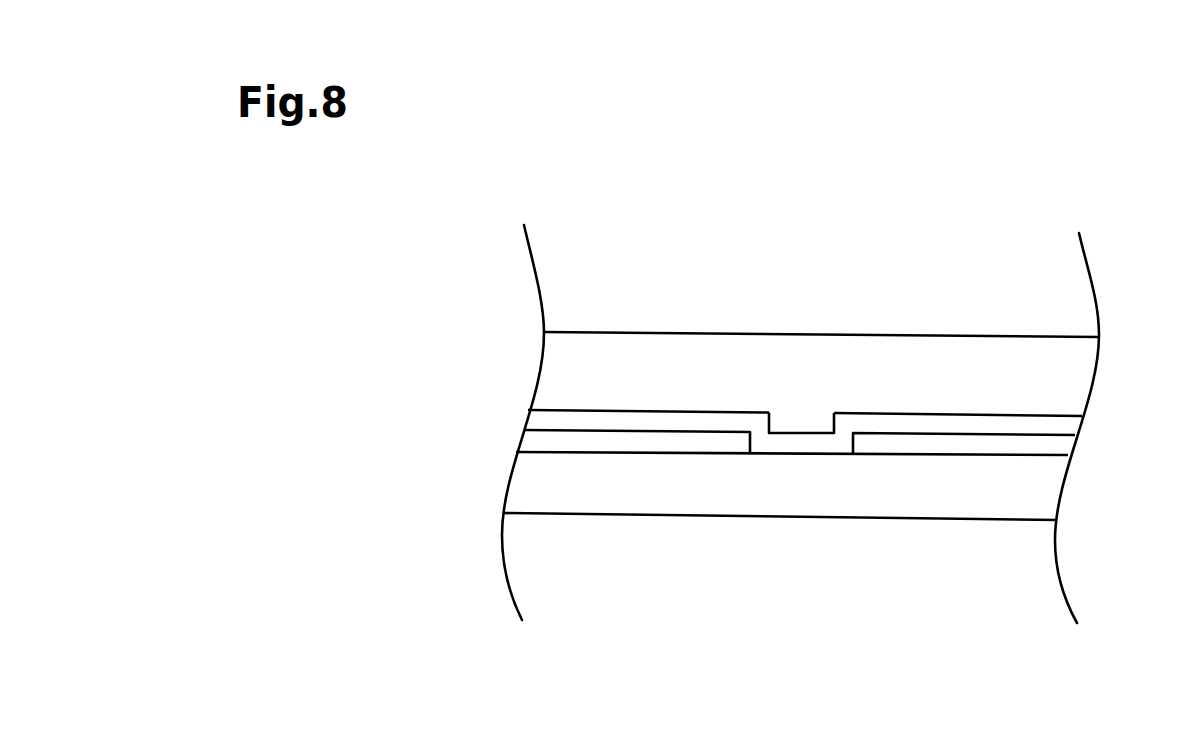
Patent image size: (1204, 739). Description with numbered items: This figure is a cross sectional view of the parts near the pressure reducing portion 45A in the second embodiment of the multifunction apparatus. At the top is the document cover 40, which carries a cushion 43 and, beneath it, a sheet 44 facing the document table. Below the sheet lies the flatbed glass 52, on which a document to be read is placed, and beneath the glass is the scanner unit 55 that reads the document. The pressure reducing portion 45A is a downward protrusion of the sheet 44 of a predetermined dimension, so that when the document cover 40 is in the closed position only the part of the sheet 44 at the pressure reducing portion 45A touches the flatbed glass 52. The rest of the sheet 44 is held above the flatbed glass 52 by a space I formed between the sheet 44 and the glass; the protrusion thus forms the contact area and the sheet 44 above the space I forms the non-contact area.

The document cover 40 is at (819, 318).
The cushion 43 is at (946, 391).
The sheet 44 is at (558, 420).
The pressure reducing portion 45A is at (802, 426).
The flatbed glass 52 is at (818, 501).
The scanner unit 55 is at (818, 565).
The space I is at (557, 442).